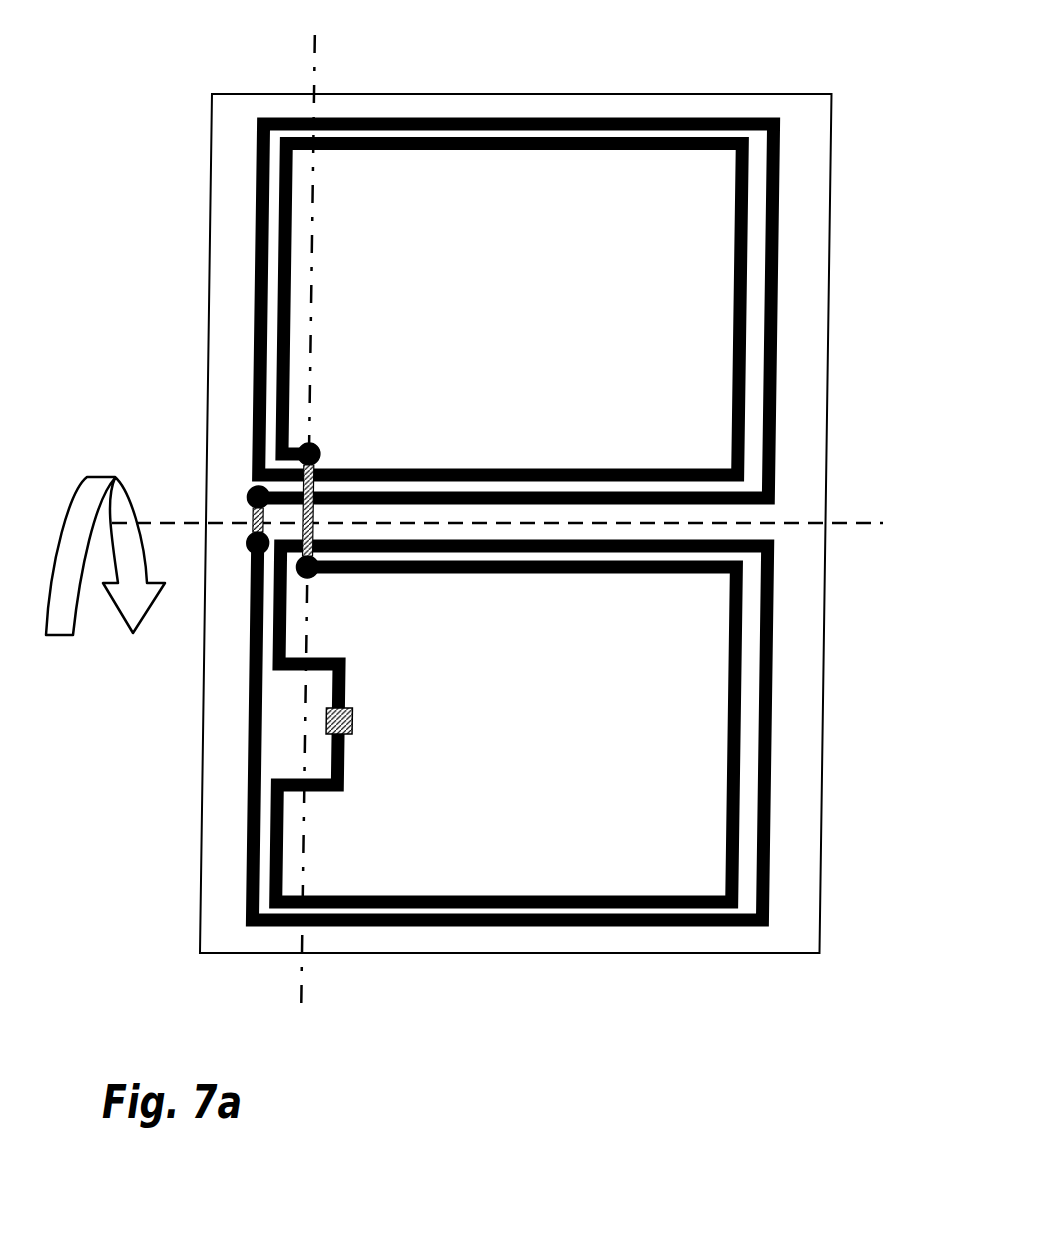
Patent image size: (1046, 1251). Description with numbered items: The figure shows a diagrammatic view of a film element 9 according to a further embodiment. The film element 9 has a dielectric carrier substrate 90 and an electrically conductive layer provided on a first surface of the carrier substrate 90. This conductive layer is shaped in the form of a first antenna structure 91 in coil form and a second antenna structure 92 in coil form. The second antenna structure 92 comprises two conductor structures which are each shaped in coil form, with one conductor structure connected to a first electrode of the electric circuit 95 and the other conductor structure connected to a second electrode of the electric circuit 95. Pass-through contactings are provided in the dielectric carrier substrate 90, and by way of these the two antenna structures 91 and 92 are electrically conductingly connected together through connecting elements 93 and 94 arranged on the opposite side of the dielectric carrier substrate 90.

The film element 9 is at (684, 70).
The dielectric carrier substrate 90 is at (503, 100).
The first antenna structure 91 is at (292, 313).
The second antenna structure 92 is at (392, 895).
The connecting element 93 is at (333, 472).
The connecting element 94 is at (253, 520).
The electric circuit 95 is at (362, 720).